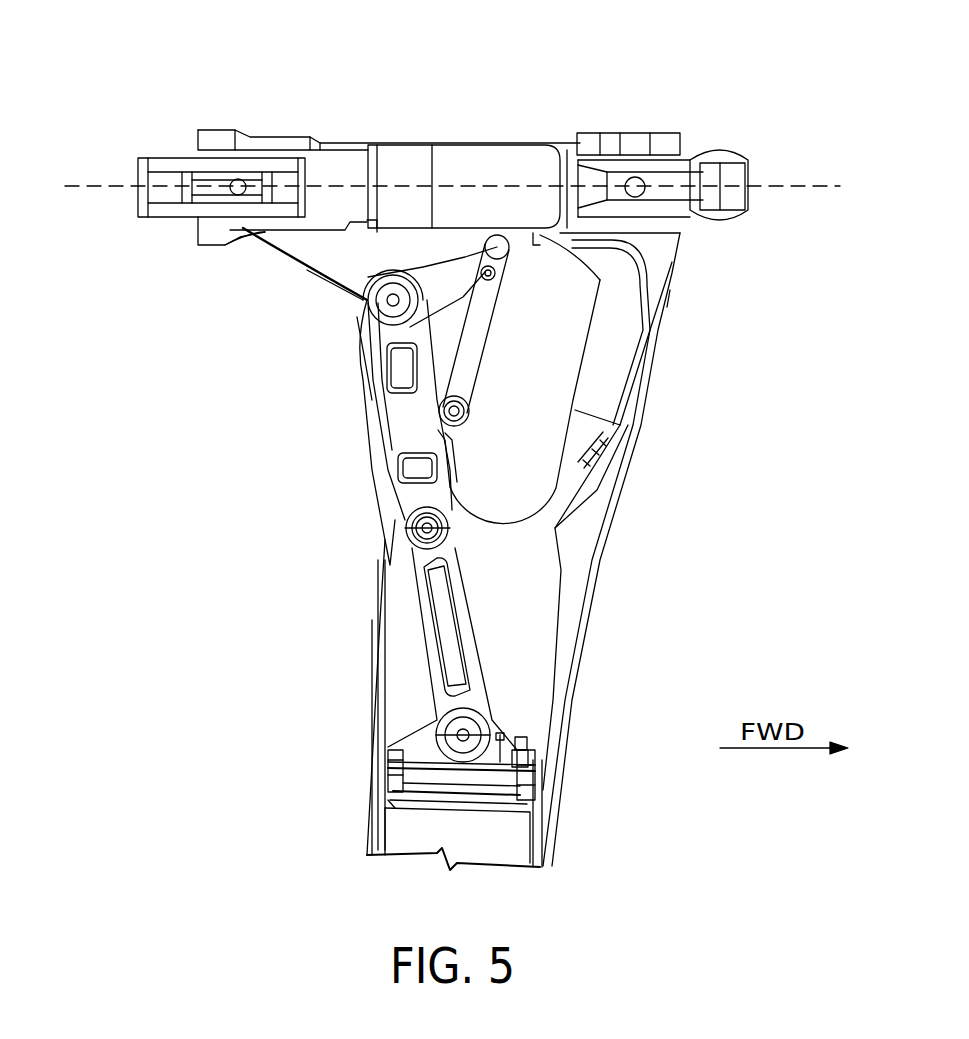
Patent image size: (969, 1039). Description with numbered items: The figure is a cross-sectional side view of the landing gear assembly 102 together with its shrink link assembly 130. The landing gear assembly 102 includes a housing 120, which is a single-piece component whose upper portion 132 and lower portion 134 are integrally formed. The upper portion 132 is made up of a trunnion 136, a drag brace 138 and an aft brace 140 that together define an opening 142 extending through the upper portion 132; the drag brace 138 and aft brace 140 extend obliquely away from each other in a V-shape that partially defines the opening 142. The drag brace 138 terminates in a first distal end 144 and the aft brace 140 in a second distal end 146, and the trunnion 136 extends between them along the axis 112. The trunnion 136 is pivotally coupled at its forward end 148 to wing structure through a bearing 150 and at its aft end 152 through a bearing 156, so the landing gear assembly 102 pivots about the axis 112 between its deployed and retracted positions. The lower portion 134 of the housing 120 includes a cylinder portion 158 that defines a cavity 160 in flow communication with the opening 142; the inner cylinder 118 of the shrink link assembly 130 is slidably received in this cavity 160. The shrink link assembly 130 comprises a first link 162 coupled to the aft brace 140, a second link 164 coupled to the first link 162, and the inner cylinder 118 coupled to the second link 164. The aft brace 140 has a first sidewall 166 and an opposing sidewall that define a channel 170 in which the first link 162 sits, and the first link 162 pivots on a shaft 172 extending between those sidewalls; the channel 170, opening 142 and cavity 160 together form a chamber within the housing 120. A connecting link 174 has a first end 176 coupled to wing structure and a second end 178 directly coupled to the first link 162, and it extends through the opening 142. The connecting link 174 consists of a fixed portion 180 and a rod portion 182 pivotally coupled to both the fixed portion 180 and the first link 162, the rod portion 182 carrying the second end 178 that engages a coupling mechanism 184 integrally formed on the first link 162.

The landing gear assembly 102 is at (118, 95).
The axis 112 is at (108, 186).
The inner cylinder 118 is at (507, 838).
The housing 120 is at (598, 530).
The shrink link assembly 130 is at (350, 525).
The upper portion 132 is at (172, 378).
The lower portion 134 is at (295, 776).
The trunnion 136 is at (467, 145).
The drag brace 138 is at (640, 443).
The aft brace 140 is at (373, 398).
The opening 142 is at (585, 331).
The first distal end 144 is at (665, 258).
The second distal end 146 is at (357, 317).
The forward end 148 is at (668, 133).
The bearing 150 is at (722, 152).
The aft end 152 is at (213, 130).
The bearing 156 is at (162, 160).
The cylinder portion 158 is at (368, 833).
The cavity 160 is at (540, 690).
The first link 162 is at (393, 440).
The second link 164 is at (443, 628).
The first sidewall 166 is at (432, 287).
The channel 170 is at (470, 472).
The shaft 172 is at (373, 300).
The connecting link 174 is at (514, 304).
The first end 176 is at (520, 257).
The second end 178 is at (480, 400).
The fixed portion 180 is at (655, 272).
The rod portion 182 is at (473, 347).
The coupling mechanism 184 is at (438, 428).